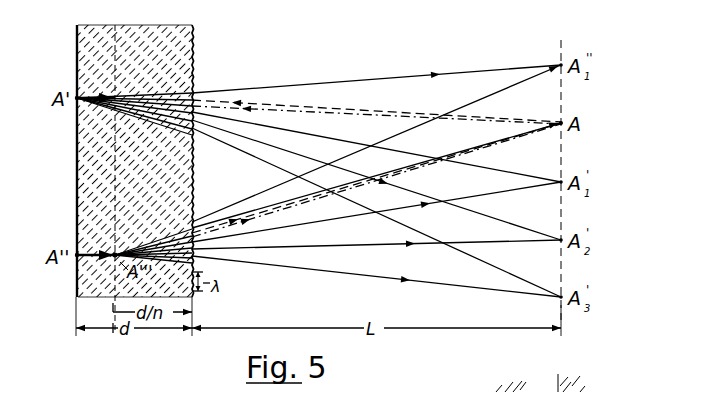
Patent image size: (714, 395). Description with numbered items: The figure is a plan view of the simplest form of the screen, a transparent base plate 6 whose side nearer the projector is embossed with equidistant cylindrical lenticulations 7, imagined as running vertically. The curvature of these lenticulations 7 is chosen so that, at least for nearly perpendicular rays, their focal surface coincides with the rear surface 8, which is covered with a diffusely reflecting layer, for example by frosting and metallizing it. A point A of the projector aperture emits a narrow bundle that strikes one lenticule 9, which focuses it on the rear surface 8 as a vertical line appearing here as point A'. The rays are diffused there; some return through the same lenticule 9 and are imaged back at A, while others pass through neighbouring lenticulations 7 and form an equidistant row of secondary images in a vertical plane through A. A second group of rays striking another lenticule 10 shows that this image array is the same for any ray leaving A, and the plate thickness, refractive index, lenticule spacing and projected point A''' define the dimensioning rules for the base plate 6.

The base plate 6 is at (182, 48).
The cylindrical lenticulations 7 is at (193, 178).
The rear surface 8 is at (77, 178).
The lenticule 9 is at (194, 100).
The lenticule 10 is at (194, 231).